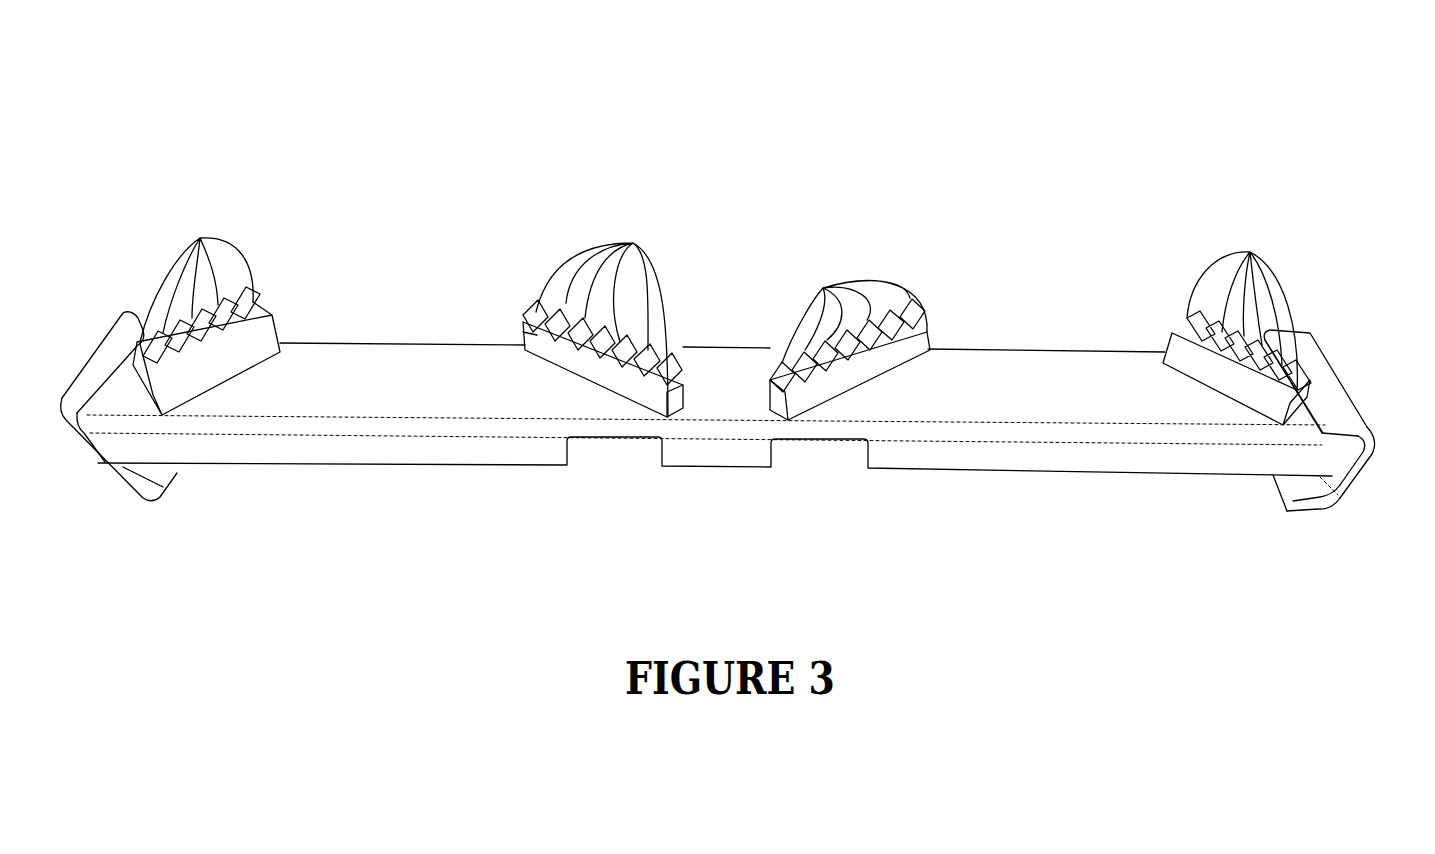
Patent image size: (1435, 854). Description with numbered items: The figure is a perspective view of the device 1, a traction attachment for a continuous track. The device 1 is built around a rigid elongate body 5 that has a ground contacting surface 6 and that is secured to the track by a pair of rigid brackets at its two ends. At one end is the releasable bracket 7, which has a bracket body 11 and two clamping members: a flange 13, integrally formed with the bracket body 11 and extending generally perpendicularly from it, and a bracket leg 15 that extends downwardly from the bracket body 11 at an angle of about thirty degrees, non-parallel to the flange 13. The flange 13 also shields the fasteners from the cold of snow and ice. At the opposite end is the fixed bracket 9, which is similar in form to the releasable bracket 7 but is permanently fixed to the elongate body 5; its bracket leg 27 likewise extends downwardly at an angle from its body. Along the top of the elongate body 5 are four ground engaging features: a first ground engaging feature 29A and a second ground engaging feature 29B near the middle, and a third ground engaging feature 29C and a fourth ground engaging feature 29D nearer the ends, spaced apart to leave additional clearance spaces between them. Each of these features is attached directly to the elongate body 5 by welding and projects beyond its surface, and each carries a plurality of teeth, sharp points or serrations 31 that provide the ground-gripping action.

The device 1 is at (402, 130).
The elongate body 5 is at (998, 352).
The ground contacting surface 6 is at (375, 348).
The releasable bracket 7 is at (1317, 347).
The fixed bracket 9 is at (108, 345).
The bracket body 11 is at (1353, 477).
The flange 13 is at (1357, 433).
The bracket leg 15 is at (1318, 503).
The bracket leg 27 is at (120, 497).
The first ground engaging feature 29A is at (523, 323).
The second ground engaging feature 29B is at (913, 343).
The third ground engaging feature 29C is at (272, 315).
The fourth ground engaging feature 29D is at (1175, 340).
The teeth, sharp points or serrations 31 is at (200, 240).